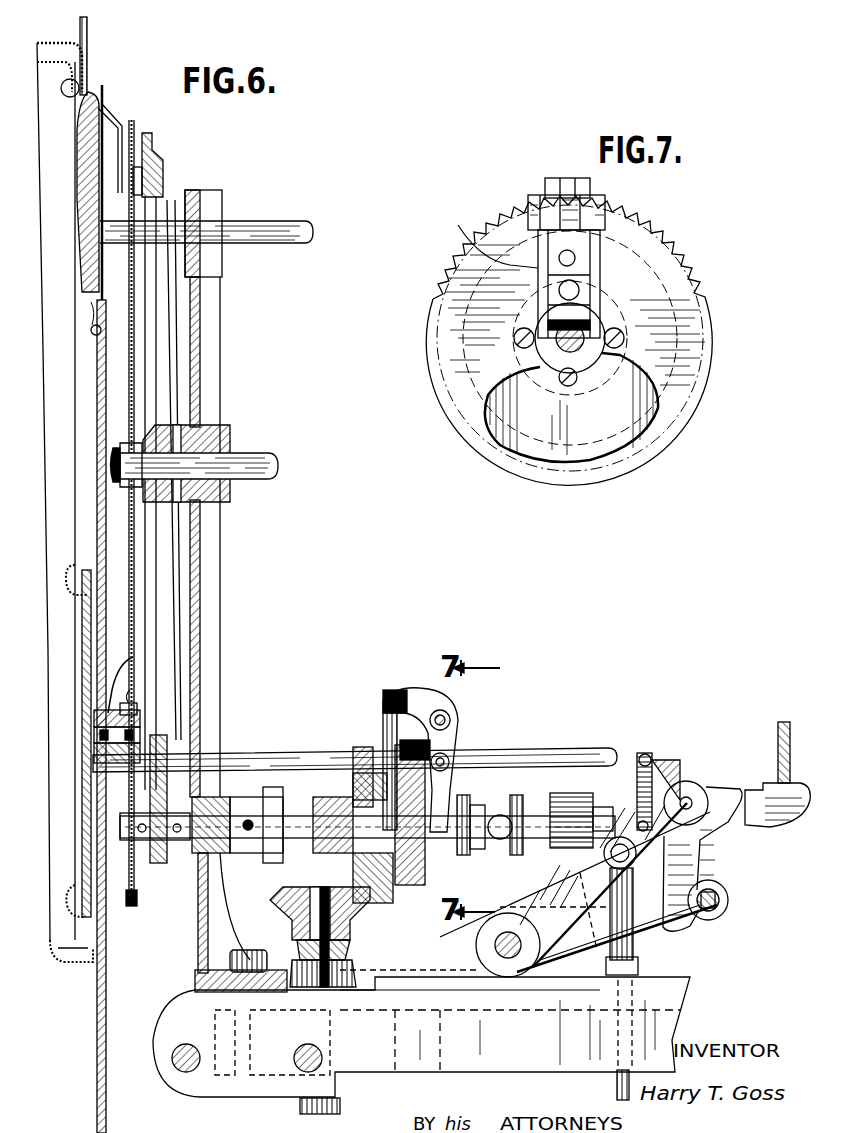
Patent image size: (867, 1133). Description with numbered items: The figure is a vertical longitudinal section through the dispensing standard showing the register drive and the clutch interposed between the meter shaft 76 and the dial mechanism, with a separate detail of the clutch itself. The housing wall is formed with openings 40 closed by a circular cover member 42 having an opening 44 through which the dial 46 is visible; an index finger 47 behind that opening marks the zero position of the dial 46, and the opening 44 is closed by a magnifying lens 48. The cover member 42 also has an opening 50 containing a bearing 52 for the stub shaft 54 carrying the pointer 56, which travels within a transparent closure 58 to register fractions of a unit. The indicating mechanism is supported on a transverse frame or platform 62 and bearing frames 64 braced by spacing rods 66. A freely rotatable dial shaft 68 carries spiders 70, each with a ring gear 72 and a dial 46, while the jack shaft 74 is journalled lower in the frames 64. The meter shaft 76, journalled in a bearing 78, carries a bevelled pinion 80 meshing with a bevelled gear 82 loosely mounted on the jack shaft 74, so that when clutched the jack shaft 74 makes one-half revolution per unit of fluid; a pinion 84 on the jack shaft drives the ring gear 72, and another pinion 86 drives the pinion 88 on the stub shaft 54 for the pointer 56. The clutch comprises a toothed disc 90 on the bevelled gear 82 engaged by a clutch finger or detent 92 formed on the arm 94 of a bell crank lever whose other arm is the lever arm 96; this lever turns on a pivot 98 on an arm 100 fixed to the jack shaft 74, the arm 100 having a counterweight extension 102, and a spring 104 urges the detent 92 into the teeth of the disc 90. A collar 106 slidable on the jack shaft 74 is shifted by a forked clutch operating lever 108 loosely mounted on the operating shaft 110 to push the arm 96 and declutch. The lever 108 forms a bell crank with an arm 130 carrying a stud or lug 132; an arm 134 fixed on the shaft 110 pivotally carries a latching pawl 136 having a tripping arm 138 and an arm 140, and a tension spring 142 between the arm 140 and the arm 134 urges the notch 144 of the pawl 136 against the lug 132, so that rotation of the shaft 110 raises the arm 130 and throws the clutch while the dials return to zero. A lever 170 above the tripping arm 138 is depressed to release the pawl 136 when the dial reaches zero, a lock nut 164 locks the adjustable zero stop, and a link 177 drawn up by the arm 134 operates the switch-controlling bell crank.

In FIG. 6, the openings 40 is at (68, 96).
In FIG. 6, the circular cover member 42 is at (96, 400).
In FIG. 6, the opening 44 is at (99, 326).
In FIG. 6, the dial 46 is at (134, 126).
In FIG. 6, the index finger 47 is at (104, 127).
In FIG. 6, the magnifying lens 48 is at (80, 183).
In FIG. 6, the opening 50 is at (138, 658).
In FIG. 6, the bearing 52 is at (143, 723).
In FIG. 6, the stub shaft 54 is at (145, 743).
In FIG. 6, the pointer 56 is at (67, 578).
In FIG. 6, the transparent closure 58 is at (58, 743).
In FIG. 6, the transverse frame 62 is at (404, 1070).
In FIG. 6, the bearing frames 64 is at (202, 388).
In FIG. 6, the spacing rods 66 is at (296, 229).
In FIG. 6, the dial shaft 68 is at (266, 466).
In FIG. 6, the spiders 70 is at (178, 336).
In FIG. 6, the ring gear 72 is at (160, 148).
In FIG. 6, the jack shaft 74 is at (300, 814).
In FIG. 7, the jack shaft 74 is at (560, 342).
In FIG. 6, the meter shaft 76 is at (298, 948).
In FIG. 6, the bearing 78 is at (346, 951).
In FIG. 6, the bevelled pinion 80 is at (283, 896).
In FIG. 6, the bevelled gear 82 is at (357, 750).
In FIG. 6, the pinion 84 is at (158, 864).
In FIG. 6, the pinion 86 is at (132, 906).
In FIG. 6, the pinion 88 is at (138, 700).
In FIG. 6, the disc 90 is at (432, 744).
In FIG. 7, the disc 90 is at (655, 233).
In FIG. 6, the clutch finger 92 is at (395, 700).
In FIG. 7, the clutch finger 92 is at (598, 190).
In FIG. 6, the arm 94 is at (430, 699).
In FIG. 6, the lever arm 96 is at (452, 766).
In FIG. 7, the lever arm 96 is at (597, 298).
In FIG. 6, the pivot 98 is at (452, 712).
In FIG. 6, the arm 100 is at (375, 790).
In FIG. 7, the arm 100 is at (600, 236).
In FIG. 6, the extension 102 is at (427, 879).
In FIG. 7, the extension 102 is at (612, 447).
In FIG. 6, the spring 104 is at (470, 755).
In FIG. 7, the spring 104 is at (458, 225).
In FIG. 6, the collar 106 is at (485, 800).
In FIG. 6, the forked clutch operating lever 108 is at (512, 856).
In FIG. 6, the operating shaft 110 is at (512, 950).
In FIG. 6, the arm 130 is at (680, 920).
In FIG. 6, the stud 132 is at (728, 895).
In FIG. 6, the arm 134 is at (640, 752).
In FIG. 6, the latching pawl 136 is at (698, 860).
In FIG. 6, the tripping arm 138 is at (772, 825).
In FIG. 6, the arm 140 is at (668, 770).
In FIG. 6, the tension spring 142 is at (646, 822).
In FIG. 6, the notch 144 is at (722, 910).
In FIG. 6, the lock nut 164 is at (275, 786).
In FIG. 6, the lever 170 is at (783, 722).
In FIG. 6, the link 177 is at (615, 1082).